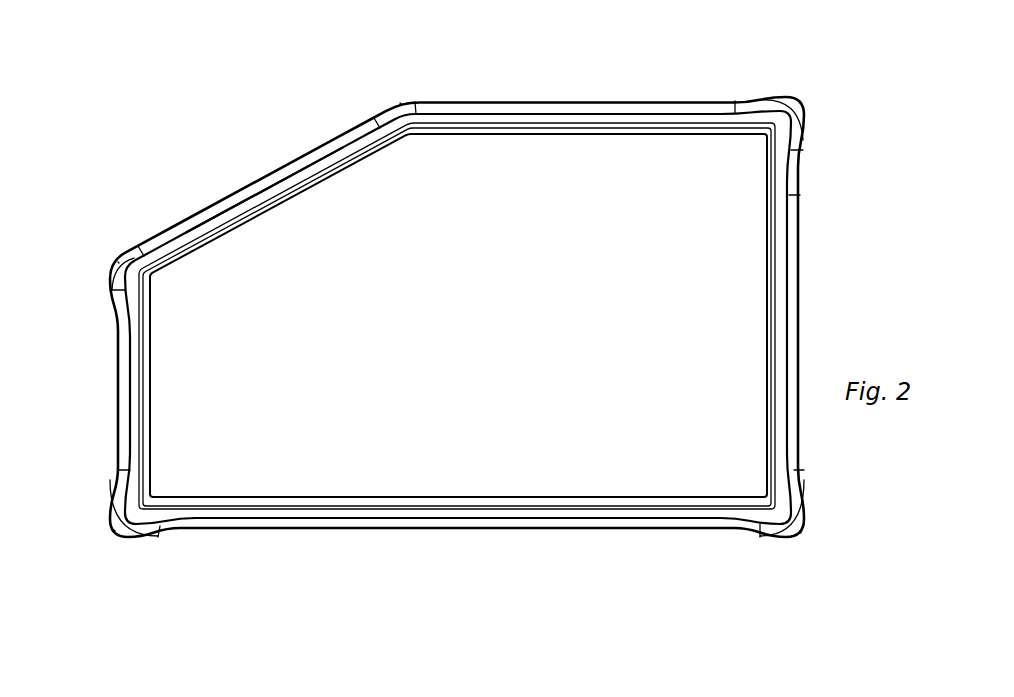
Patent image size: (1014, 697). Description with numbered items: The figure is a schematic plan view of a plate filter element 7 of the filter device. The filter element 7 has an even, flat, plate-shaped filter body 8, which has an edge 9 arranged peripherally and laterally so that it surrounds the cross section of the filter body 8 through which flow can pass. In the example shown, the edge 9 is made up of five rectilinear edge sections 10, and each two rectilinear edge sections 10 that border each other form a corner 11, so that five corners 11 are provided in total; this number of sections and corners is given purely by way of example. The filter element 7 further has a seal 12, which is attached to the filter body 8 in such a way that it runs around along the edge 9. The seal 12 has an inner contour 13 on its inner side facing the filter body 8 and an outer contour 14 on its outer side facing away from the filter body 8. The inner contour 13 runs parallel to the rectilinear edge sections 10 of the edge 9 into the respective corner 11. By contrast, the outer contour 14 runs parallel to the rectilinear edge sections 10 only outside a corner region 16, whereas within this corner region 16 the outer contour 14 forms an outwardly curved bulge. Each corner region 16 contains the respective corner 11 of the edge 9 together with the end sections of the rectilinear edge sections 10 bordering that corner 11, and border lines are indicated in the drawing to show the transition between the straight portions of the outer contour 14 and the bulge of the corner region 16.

The filter element 7 is at (850, 170).
The filter body 8 is at (536, 317).
The edge 9 is at (596, 118).
The rectilinear edge section 10 is at (528, 112).
The corner 11 is at (404, 96).
The seal 12 is at (802, 228).
The inner contour 13 is at (228, 236).
The outer contour 14 is at (314, 148).
The corner region 16 is at (390, 97).